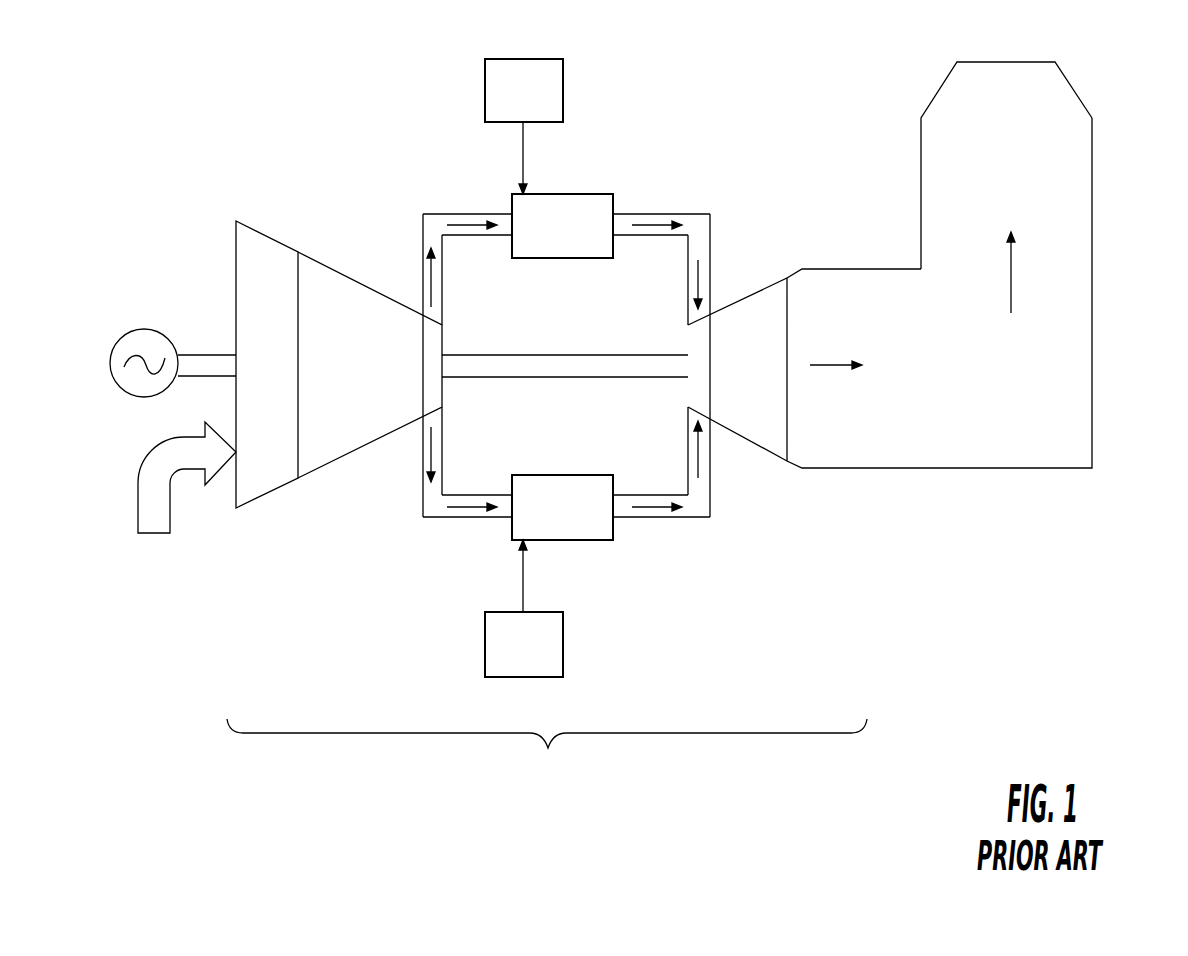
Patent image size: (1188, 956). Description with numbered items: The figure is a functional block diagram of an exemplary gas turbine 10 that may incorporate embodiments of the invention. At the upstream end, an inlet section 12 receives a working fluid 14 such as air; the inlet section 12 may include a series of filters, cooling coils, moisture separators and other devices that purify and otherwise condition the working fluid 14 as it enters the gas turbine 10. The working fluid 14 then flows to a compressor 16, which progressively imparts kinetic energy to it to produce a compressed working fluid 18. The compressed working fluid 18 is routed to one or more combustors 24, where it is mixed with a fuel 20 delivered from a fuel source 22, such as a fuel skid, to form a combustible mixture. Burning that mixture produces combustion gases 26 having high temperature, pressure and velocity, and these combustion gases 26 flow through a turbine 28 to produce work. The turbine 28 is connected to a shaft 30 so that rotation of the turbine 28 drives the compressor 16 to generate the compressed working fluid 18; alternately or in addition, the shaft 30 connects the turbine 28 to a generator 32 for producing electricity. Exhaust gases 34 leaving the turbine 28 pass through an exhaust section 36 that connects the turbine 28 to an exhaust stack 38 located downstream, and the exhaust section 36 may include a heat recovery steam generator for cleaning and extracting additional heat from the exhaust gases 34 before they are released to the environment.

The gas turbine 10 is at (547, 752).
The inlet section 12 is at (283, 384).
The working fluid 14 is at (153, 535).
The compressor 16 is at (381, 384).
The compressed working fluid 18 is at (430, 287).
The fuel 20 is at (523, 157).
The fuel source 22 is at (536, 107).
The combustor 24 is at (574, 242).
The combustion gases 26 is at (704, 277).
The turbine 28 is at (751, 384).
The shaft 30 is at (557, 377).
The generator 32 is at (143, 330).
The exhaust gases 34 is at (1013, 290).
The exhaust section 36 is at (1019, 384).
The exhaust stack 38 is at (1095, 168).